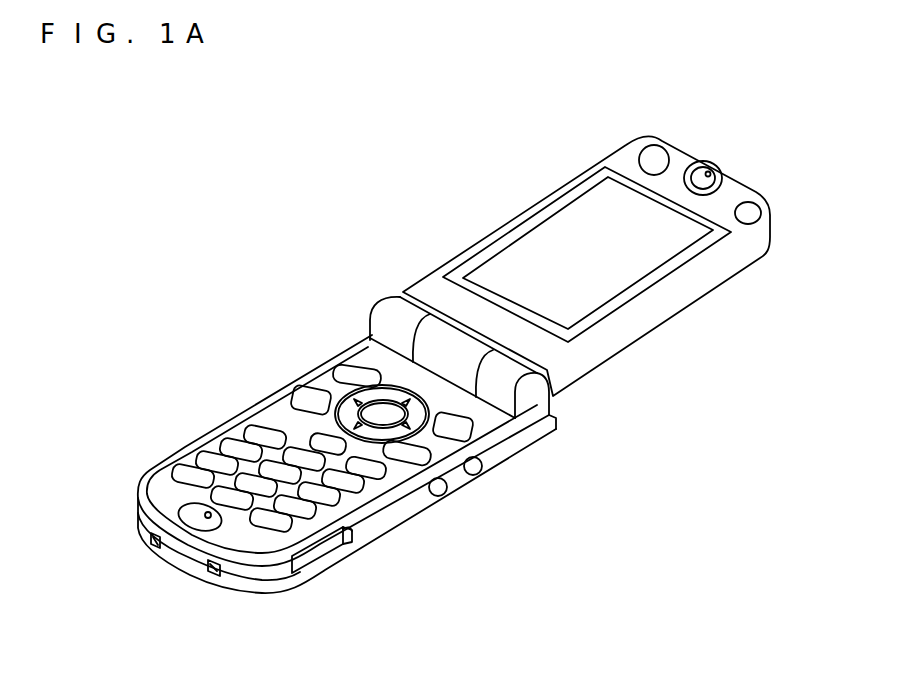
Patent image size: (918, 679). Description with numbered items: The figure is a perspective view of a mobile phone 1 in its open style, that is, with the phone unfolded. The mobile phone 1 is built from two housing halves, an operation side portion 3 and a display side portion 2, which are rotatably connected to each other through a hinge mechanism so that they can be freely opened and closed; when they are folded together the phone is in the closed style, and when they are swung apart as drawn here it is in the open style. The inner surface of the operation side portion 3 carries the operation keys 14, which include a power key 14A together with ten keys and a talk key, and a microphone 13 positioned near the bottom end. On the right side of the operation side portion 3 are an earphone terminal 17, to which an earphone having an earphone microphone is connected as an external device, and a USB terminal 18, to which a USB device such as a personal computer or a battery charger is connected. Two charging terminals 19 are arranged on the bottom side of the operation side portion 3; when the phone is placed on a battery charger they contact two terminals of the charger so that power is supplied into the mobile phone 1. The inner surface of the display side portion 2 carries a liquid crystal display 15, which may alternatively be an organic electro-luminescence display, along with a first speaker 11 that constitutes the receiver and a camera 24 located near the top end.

The mobile phone 1 is at (248, 164).
The display side portion 2 is at (650, 315).
The operation side portion 3 is at (517, 450).
The first speaker 11 is at (708, 171).
The microphone 13 is at (205, 519).
The operation keys 14 is at (334, 337).
The power key 14A is at (385, 474).
The liquid crystal display (LCD) 15 is at (547, 237).
The earphone terminal 17 is at (441, 496).
The USB terminal 18 is at (322, 550).
The charging terminals 19 is at (152, 547).
The camera 24 is at (653, 146).